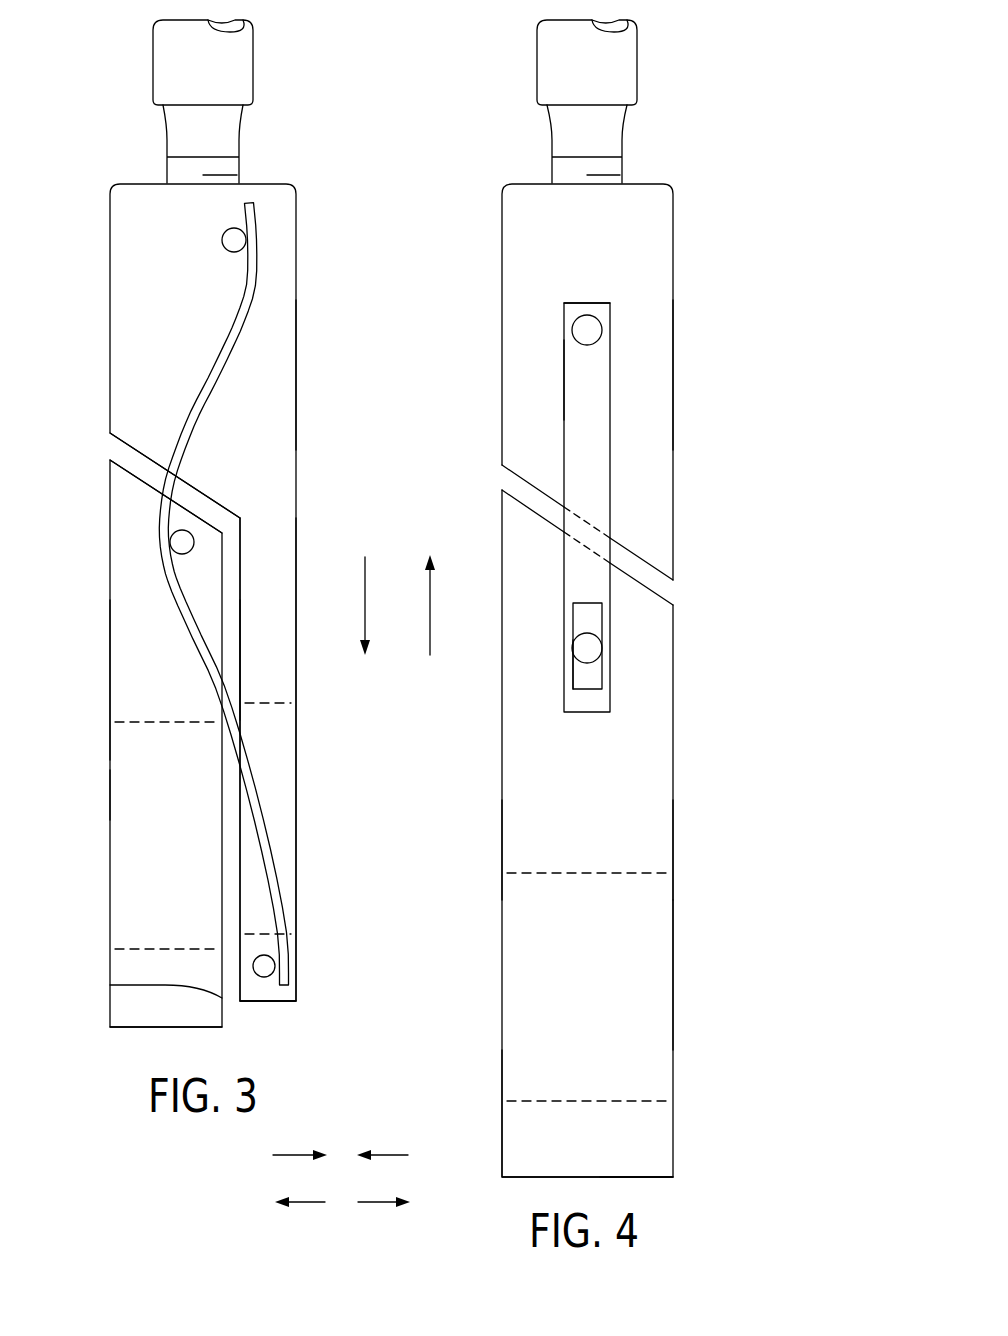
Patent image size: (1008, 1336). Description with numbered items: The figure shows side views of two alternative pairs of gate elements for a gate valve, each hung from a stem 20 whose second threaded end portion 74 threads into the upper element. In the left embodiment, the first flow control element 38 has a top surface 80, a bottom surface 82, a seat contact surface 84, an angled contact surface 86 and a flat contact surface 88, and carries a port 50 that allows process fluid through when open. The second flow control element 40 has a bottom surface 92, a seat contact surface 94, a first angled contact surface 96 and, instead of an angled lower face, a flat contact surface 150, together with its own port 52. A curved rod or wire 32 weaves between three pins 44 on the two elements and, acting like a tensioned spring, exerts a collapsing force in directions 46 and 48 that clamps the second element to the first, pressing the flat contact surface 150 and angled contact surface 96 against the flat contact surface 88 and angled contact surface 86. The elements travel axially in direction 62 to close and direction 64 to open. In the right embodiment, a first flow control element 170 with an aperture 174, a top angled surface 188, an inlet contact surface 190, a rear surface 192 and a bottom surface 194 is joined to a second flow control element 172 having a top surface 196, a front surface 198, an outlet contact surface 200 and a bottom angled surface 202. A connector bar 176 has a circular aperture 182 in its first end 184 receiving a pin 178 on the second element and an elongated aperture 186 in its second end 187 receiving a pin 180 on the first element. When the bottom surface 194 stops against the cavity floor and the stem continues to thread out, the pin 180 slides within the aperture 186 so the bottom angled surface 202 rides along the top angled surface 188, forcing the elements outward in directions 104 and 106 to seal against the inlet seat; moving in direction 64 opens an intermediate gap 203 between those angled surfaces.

In FIG. 3, the stem 20 is at (155, 66).
In FIG. 4, the stem 20 is at (539, 66).
In FIG. 3, the second threaded end portion 74 is at (167, 146).
In FIG. 4, the second threaded end portion 74 is at (552, 146).
In FIG. 3, the top surface 80 is at (264, 183).
In FIG. 4, the top surface 196 is at (648, 183).
In FIG. 3, the first flow control element 38 is at (88, 330).
In FIG. 3, the seat contact surface 84 is at (296, 380).
In FIG. 3, the angled contact surface 86 is at (150, 464).
In FIG. 3, the first angled contact surface 96 is at (135, 477).
In FIG. 3, the second flow control element 40 is at (88, 870).
In FIG. 3, the seat contact surface 94 is at (110, 695).
In FIG. 3, the port 50 is at (124, 793).
In FIG. 3, the flat contact surface 150 is at (110, 985).
In FIG. 3, the bottom surface 92 is at (118, 1030).
In FIG. 3, the port 52 is at (290, 790).
In FIG. 3, the flat contact surface 88 is at (240, 665).
In FIG. 3, the bottom surface 82 is at (266, 1002).
In FIG. 3, the rod or wire 32 is at (170, 593).
In FIG. 3, the pins 44 is at (225, 248).
In FIG. 3, the direction 62 is at (365, 600).
In FIG. 4, the direction 64 is at (430, 612).
In FIG. 3, the direction 46 is at (290, 1156).
In FIG. 3, the direction 48 is at (388, 1156).
In FIG. 3, the direction 104 is at (300, 1203).
In FIG. 3, the direction 106 is at (375, 1203).
In FIG. 4, the outlet contact surface 200 is at (673, 212).
In FIG. 4, the second flow control element 172 is at (750, 330).
In FIG. 4, the front surface 198 is at (503, 425).
In FIG. 4, the intermediate gap 203 is at (472, 478).
In FIG. 4, the bottom angled surface 202 is at (643, 555).
In FIG. 4, the top angled surface 188 is at (640, 585).
In FIG. 4, the connector bar 176 is at (610, 447).
In FIG. 4, the aperture 182 is at (576, 318).
In FIG. 4, the first end 184 is at (563, 365).
In FIG. 4, the pin 178 is at (598, 342).
In FIG. 4, the second end 187 is at (610, 700).
In FIG. 4, the aperture 186 is at (573, 674).
In FIG. 4, the pin 180 is at (603, 649).
In FIG. 4, the inlet contact surface 190 is at (502, 843).
In FIG. 4, the rear surface 192 is at (673, 845).
In FIG. 4, the aperture 174 is at (663, 945).
In FIG. 4, the first flow control element 170 is at (702, 1062).
In FIG. 4, the bottom surface 194 is at (645, 1177).